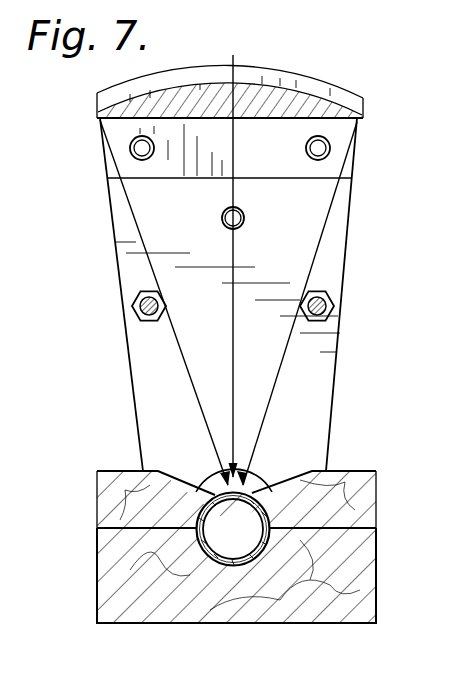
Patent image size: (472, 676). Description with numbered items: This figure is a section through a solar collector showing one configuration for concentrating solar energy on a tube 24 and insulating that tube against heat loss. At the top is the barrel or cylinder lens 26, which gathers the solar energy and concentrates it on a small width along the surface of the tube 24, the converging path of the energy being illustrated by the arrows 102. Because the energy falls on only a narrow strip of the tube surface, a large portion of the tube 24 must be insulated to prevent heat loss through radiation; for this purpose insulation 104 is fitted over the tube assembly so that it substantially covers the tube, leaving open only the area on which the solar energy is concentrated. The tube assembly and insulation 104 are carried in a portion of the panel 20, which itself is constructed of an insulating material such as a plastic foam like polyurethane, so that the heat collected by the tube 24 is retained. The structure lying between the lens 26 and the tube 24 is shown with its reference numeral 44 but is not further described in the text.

The barrel or cylinder lens 26 is at (293, 92).
The radiation source housing 44 is at (337, 248).
The arrows 102 is at (258, 424).
The tube 24 is at (263, 488).
The insulation 104 is at (108, 480).
The panel 20 is at (102, 570).